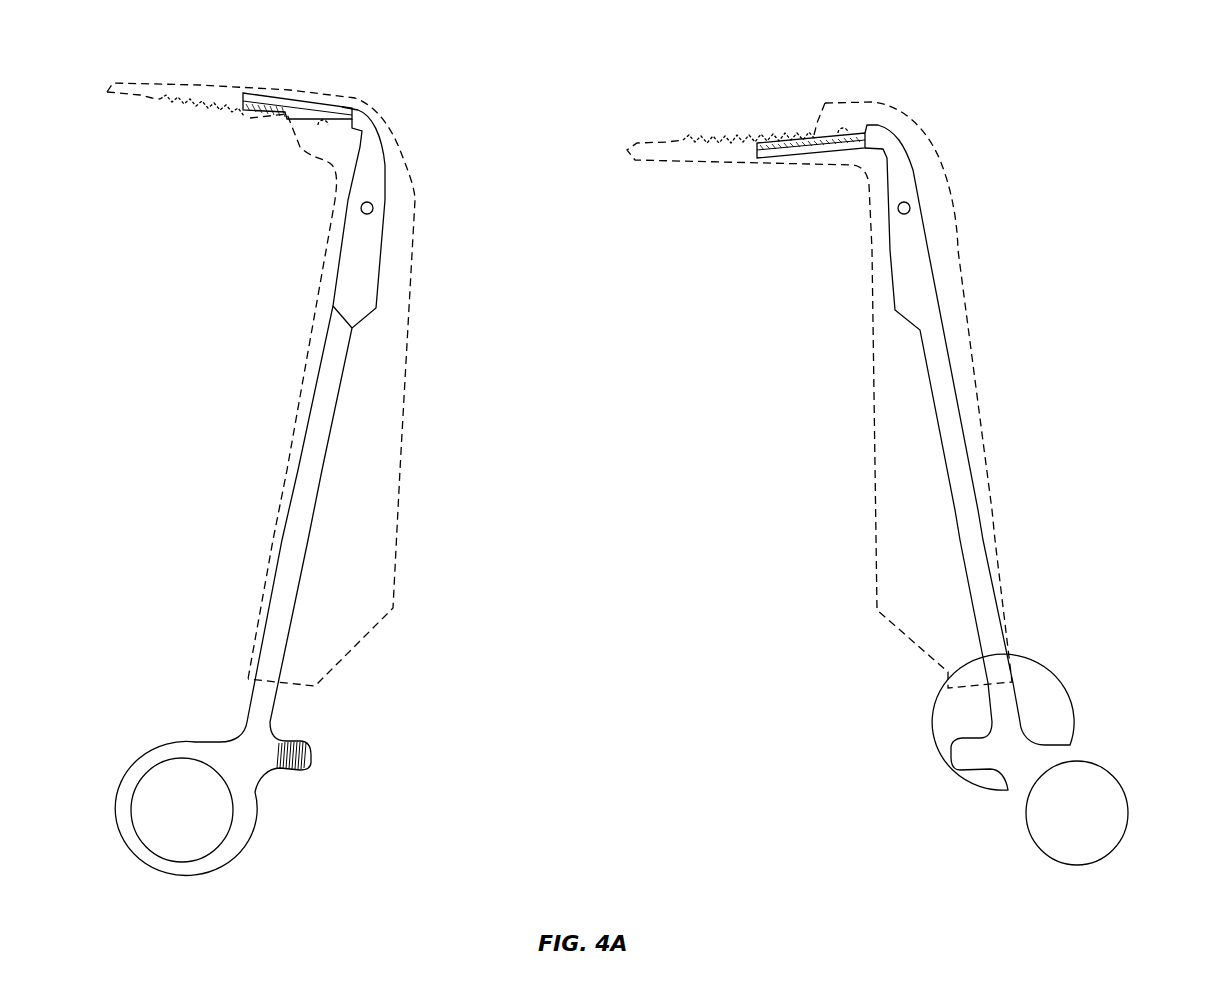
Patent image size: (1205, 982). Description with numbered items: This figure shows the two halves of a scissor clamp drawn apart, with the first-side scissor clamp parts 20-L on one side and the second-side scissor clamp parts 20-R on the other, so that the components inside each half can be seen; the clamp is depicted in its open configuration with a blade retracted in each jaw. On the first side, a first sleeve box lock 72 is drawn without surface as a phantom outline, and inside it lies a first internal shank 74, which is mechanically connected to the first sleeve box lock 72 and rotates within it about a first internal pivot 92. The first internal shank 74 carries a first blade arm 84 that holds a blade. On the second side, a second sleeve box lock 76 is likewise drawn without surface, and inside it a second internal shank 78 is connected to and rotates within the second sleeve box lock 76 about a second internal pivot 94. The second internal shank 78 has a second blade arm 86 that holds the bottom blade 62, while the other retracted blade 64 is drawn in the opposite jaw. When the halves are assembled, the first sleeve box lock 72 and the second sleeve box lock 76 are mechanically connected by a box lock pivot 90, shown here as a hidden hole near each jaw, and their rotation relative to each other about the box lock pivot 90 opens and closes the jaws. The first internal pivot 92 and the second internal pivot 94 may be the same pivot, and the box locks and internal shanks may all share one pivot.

The first-side scissor clamp parts 20-L is at (244, 700).
The second-side scissor clamp parts 20-R is at (1027, 703).
The bottom blade 62 is at (768, 158).
The blade of left arm 64 is at (260, 110).
The first sleeve box lock 72 is at (405, 388).
The first internal shank 74 is at (300, 578).
The second sleeve box lock 76 is at (1002, 585).
The second internal shank 78 is at (957, 438).
The first blade arm 84 is at (842, 148).
The second blade arm 86 is at (342, 107).
The box lock pivot 90 is at (320, 127).
The first internal pivot 92 is at (373, 208).
The second internal pivot 94 is at (910, 208).